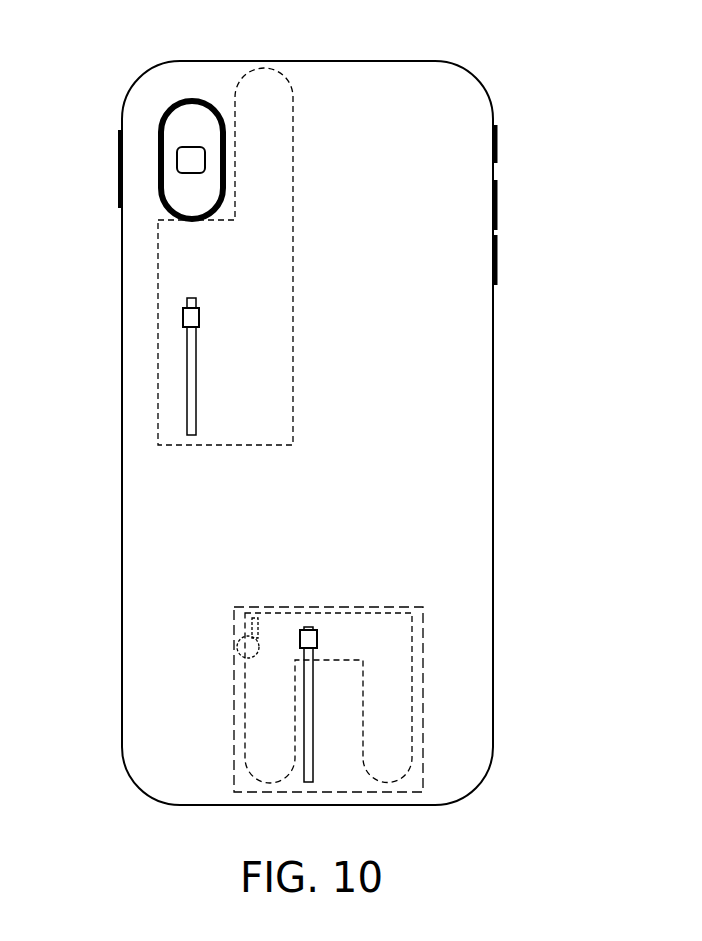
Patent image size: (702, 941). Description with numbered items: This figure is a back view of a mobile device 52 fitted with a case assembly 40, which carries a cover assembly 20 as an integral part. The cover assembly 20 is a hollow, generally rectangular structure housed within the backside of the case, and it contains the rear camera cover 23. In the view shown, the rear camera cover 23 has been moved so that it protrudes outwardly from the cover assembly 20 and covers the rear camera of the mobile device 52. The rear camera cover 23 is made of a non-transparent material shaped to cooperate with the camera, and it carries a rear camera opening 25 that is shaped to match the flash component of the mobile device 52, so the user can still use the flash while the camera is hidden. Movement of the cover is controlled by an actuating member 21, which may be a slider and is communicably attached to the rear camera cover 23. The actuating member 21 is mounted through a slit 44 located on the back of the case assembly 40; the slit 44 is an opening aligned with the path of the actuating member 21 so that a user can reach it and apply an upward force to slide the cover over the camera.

The case assembly 40 is at (437, 62).
The mobile device 52 is at (452, 127).
The rear camera cover 23 is at (160, 163).
The rear camera opening 25 is at (187, 154).
The cover assembly 20 is at (166, 379).
The actuating member 21 is at (182, 318).
The slit 44 is at (197, 357).